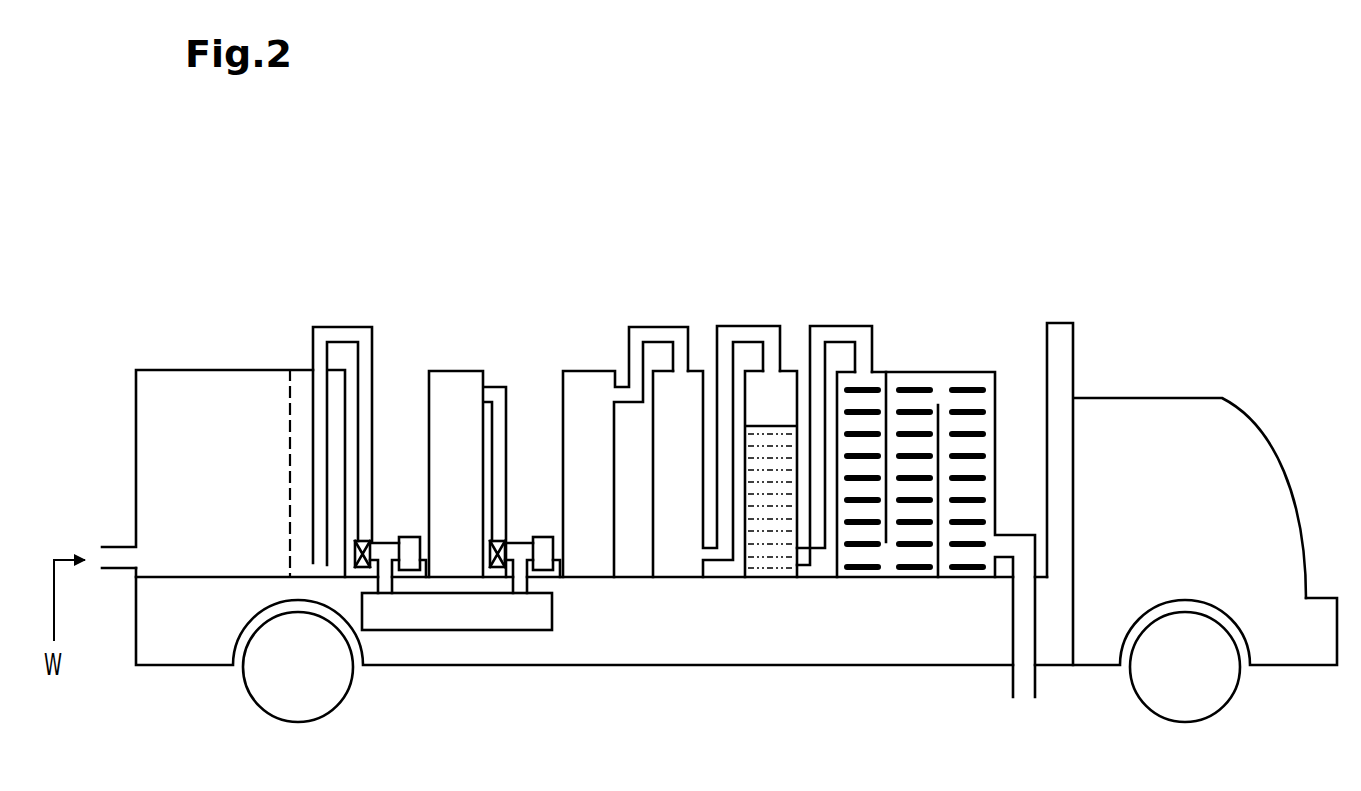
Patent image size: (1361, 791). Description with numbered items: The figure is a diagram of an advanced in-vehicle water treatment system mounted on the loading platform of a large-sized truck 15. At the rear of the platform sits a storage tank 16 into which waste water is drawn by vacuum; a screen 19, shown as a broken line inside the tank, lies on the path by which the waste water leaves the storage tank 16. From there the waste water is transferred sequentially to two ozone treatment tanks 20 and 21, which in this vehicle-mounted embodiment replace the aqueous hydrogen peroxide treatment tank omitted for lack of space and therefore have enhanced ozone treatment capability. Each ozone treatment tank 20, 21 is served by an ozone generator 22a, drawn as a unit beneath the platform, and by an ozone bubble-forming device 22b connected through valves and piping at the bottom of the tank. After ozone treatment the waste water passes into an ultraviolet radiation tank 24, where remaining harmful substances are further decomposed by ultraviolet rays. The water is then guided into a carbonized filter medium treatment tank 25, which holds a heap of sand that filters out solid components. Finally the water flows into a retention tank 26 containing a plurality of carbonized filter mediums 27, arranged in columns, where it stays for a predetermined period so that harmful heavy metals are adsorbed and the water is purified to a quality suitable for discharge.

The large-sized truck 15 is at (1163, 398).
The storage tank 16 is at (233, 371).
The screen 19 is at (290, 530).
The ozone treatment tank 20 is at (447, 371).
The ozone treatment tank 21 is at (584, 371).
The ozone generator 22a is at (482, 630).
The ozone bubble-forming device 22b is at (412, 537).
The ultraviolet radiation tank 24 is at (693, 390).
The carbonized filter medium treatment tank 25 is at (783, 387).
The retention tank 26 is at (920, 372).
The filter medium 27 is at (973, 413).